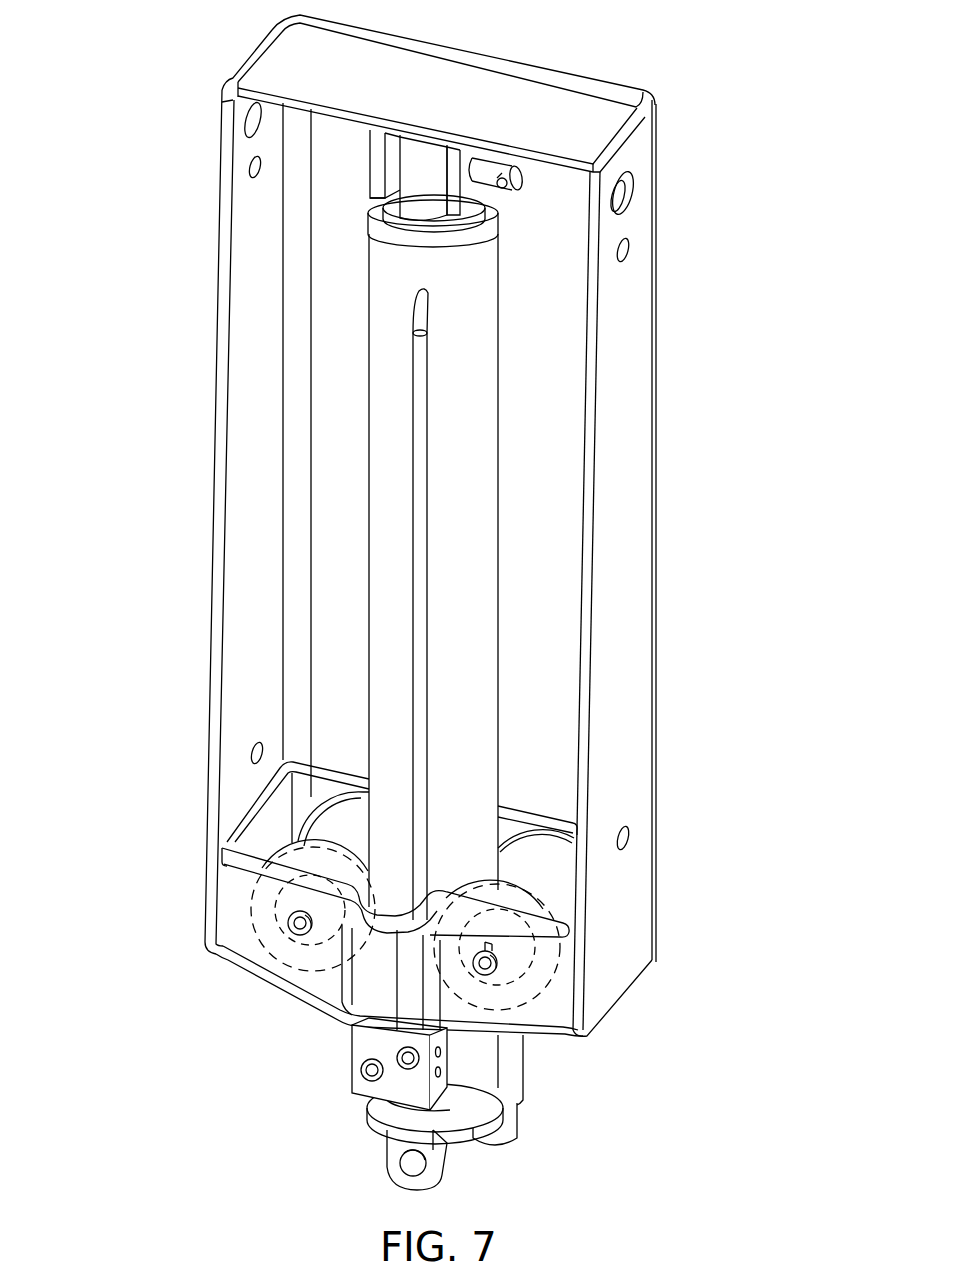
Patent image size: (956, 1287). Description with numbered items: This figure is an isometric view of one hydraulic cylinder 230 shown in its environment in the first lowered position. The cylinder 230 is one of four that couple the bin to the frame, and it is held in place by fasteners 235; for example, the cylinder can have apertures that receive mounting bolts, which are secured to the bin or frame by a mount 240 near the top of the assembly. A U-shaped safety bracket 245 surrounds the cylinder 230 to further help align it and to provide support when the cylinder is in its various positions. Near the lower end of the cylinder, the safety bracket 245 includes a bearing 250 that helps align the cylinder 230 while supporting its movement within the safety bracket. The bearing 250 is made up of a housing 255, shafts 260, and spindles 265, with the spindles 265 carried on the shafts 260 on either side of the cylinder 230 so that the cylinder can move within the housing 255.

The hydraulic cylinder 230 is at (476, 467).
The fastener 235 is at (492, 167).
The mount 240 is at (577, 117).
The safety bracket 245 is at (622, 650).
The bearing 250 is at (273, 785).
The housing 255 is at (573, 905).
The shaft 260 is at (300, 923).
The spindle 265 is at (330, 835).